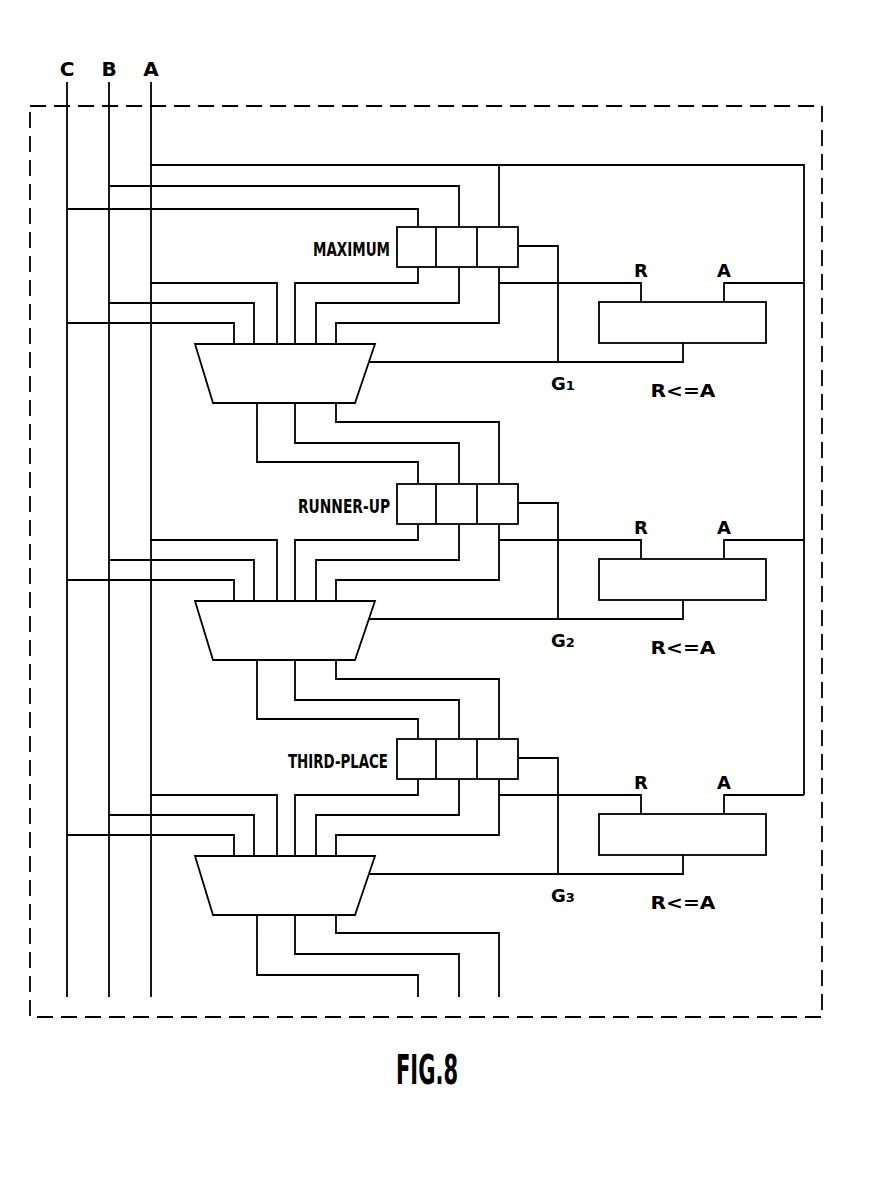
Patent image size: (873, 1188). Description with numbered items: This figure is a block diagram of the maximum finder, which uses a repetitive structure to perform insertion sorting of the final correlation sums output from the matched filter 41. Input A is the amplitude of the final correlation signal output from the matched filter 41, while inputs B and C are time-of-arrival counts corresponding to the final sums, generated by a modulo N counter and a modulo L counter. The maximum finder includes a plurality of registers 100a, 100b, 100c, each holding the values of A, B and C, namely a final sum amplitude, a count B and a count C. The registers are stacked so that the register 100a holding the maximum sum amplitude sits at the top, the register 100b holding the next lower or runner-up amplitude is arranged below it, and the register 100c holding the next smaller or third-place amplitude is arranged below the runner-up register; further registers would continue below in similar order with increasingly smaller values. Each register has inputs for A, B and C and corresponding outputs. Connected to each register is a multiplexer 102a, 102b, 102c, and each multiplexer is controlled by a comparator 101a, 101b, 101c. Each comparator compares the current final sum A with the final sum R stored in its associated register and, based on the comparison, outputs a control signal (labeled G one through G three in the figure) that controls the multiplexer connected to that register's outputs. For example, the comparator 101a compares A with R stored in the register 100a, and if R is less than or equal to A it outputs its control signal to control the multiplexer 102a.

The matched filter 41 is at (755, 104).
The register 100a is at (509, 227).
The register 100b is at (509, 484).
The register 100c is at (509, 739).
The comparator 101a is at (748, 343).
The comparator 101b is at (748, 600).
The comparator 101c is at (748, 855).
The multiplexer 102a is at (364, 374).
The multiplexer 102b is at (364, 631).
The multiplexer 102c is at (364, 886).